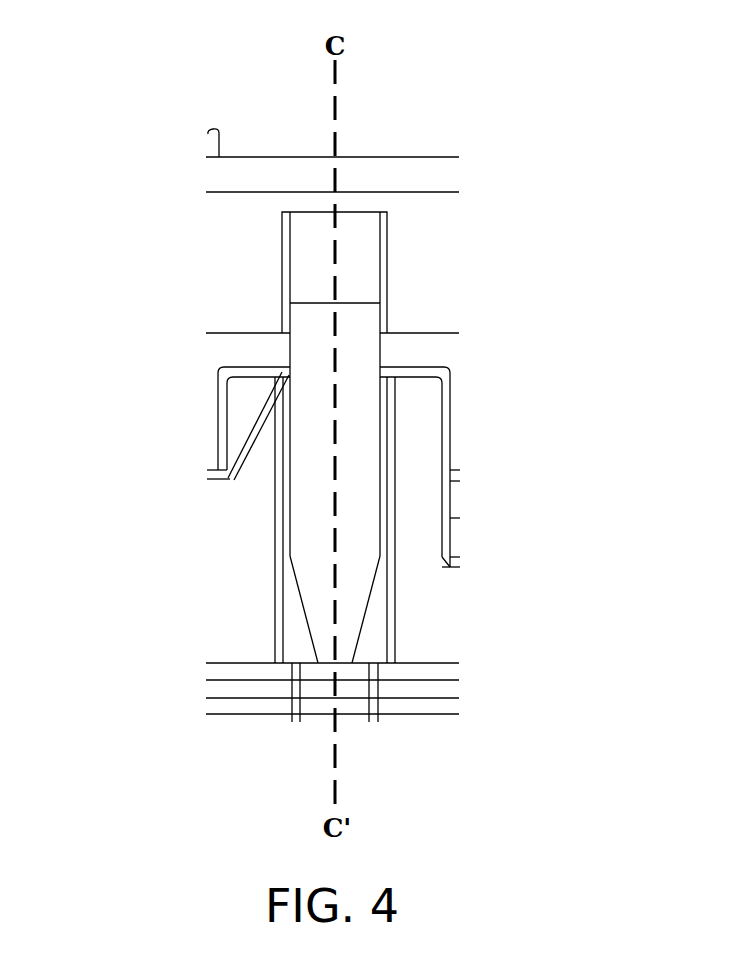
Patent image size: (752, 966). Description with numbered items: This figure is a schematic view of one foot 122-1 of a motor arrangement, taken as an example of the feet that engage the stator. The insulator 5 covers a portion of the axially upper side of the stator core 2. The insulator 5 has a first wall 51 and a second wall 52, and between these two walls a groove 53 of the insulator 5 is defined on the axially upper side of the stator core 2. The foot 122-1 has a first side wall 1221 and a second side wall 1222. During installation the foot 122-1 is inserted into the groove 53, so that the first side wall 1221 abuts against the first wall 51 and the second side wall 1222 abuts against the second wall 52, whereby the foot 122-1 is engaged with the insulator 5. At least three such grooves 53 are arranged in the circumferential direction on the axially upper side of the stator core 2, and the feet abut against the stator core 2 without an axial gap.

The foot 122-1 is at (355, 317).
The second side wall 1222 is at (380, 418).
The first side wall 1221 is at (288, 403).
The insulator 5 is at (420, 397).
The first wall 51 is at (275, 573).
The second wall 52 is at (397, 497).
The groove 53 is at (296, 633).
The stator core 2 is at (420, 665).